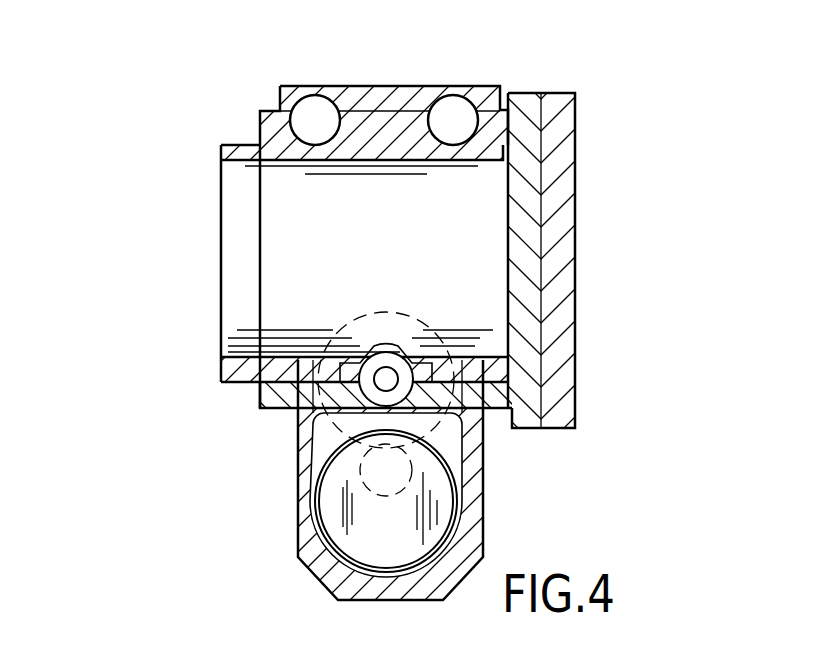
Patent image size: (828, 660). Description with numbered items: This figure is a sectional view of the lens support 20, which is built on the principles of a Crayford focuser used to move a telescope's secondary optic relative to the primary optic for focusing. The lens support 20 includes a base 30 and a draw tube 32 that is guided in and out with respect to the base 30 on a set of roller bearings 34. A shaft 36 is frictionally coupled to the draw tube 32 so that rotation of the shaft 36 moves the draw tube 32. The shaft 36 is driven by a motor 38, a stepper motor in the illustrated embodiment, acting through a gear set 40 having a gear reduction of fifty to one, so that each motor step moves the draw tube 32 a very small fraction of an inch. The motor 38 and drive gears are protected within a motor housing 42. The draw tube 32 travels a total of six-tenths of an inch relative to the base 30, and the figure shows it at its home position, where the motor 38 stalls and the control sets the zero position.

The lens support 20 is at (612, 220).
The base 30 is at (573, 138).
The draw tube 32 is at (221, 257).
The roller bearings 34 is at (440, 100).
The shaft 36 is at (393, 362).
The motor 38 is at (297, 543).
The gear set 40 is at (449, 447).
The motor housing 42 is at (297, 452).